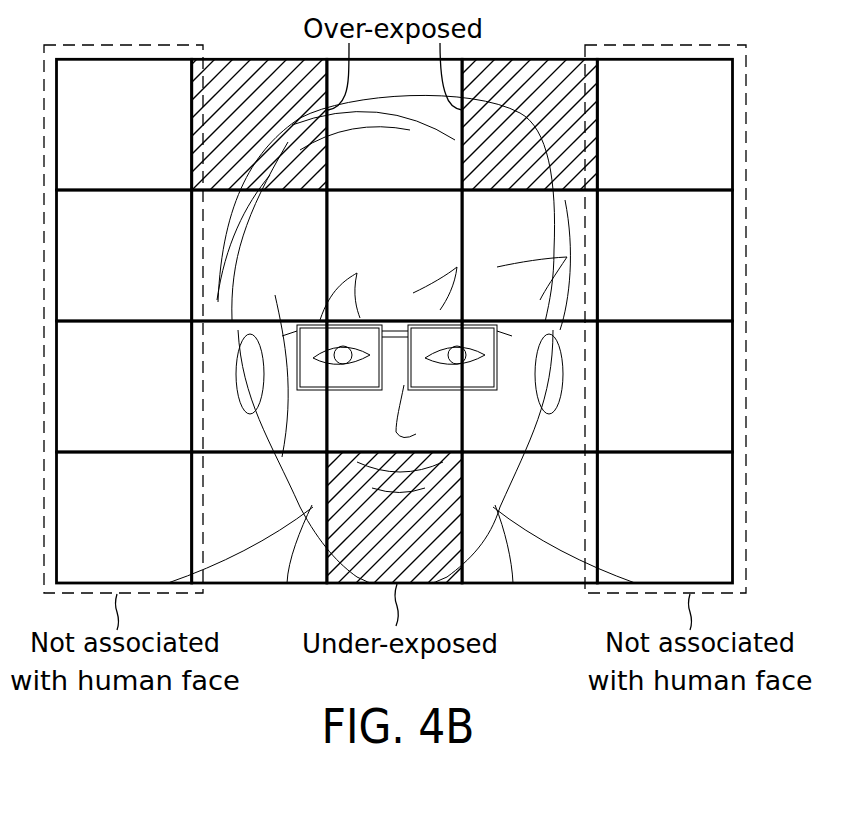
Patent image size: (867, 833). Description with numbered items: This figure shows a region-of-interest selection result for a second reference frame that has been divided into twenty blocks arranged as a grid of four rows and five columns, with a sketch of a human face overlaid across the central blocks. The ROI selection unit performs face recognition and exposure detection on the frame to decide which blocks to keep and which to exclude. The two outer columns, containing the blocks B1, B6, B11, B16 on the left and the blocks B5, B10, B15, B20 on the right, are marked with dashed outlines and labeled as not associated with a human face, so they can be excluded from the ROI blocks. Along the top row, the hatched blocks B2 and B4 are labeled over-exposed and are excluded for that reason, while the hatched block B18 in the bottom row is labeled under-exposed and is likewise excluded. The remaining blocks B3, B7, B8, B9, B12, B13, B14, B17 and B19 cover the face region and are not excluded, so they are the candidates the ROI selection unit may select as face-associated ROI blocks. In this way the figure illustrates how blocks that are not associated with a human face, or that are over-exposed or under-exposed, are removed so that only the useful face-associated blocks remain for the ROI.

The block B1 is at (124, 124).
The block B2 is at (257, 124).
The block B3 is at (394, 124).
The block B4 is at (528, 124).
The block B5 is at (664, 124).
The block B6 is at (124, 255).
The block B7 is at (259, 255).
The block B8 is at (394, 255).
The block B9 is at (529, 255).
The block B10 is at (664, 255).
The block B11 is at (124, 386).
The block B12 is at (259, 386).
The block B13 is at (394, 386).
The block B14 is at (529, 386).
The block B15 is at (664, 386).
The block B16 is at (124, 517).
The block B17 is at (259, 517).
The block B18 is at (394, 517).
The block B19 is at (529, 517).
The block B20 is at (664, 517).